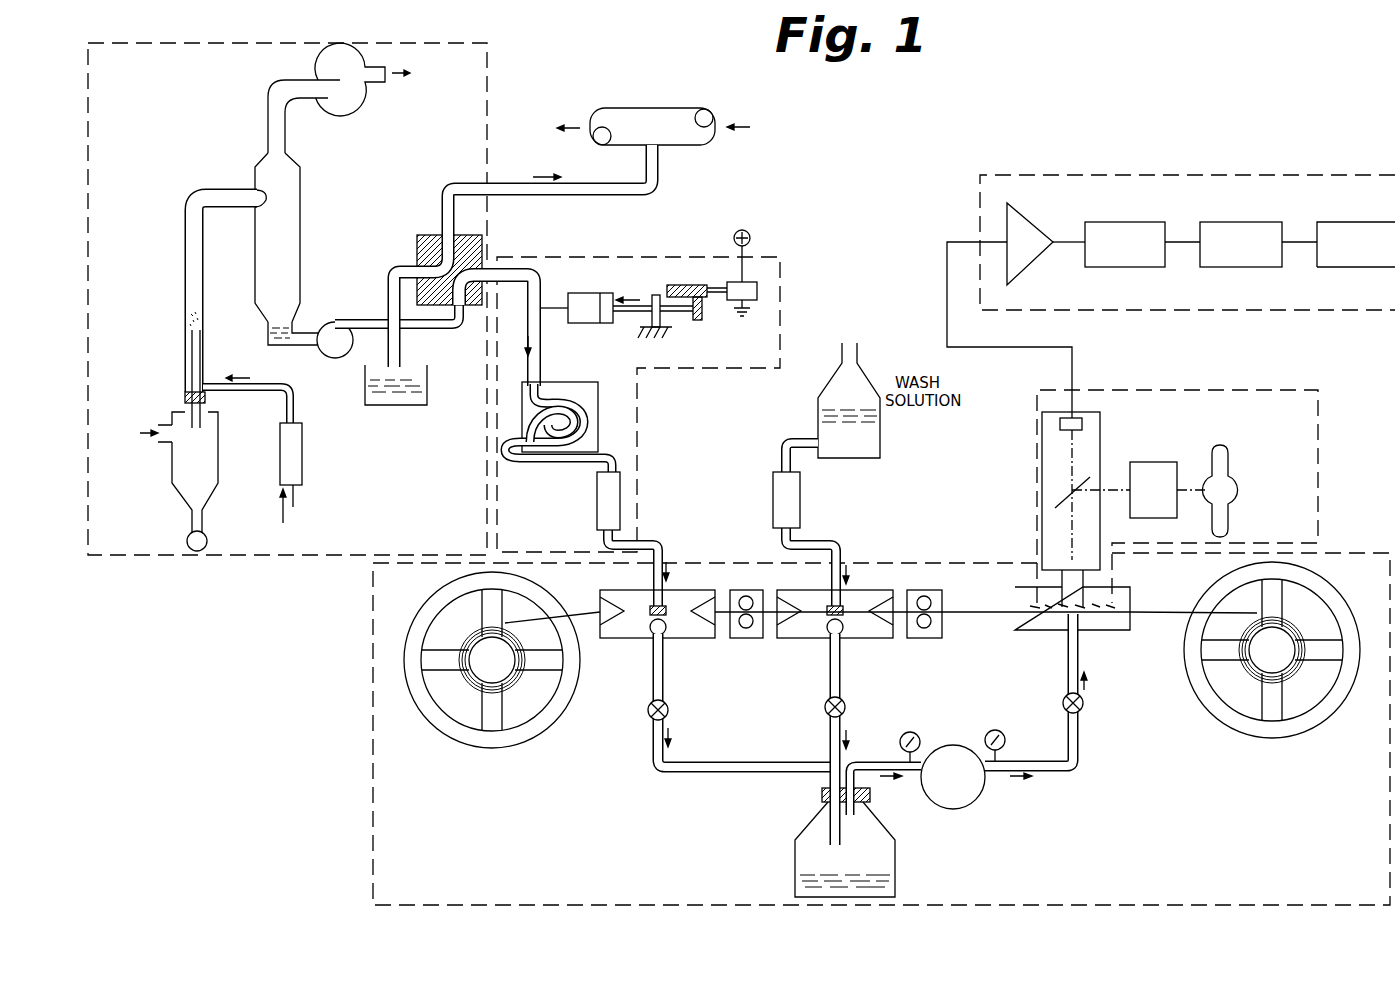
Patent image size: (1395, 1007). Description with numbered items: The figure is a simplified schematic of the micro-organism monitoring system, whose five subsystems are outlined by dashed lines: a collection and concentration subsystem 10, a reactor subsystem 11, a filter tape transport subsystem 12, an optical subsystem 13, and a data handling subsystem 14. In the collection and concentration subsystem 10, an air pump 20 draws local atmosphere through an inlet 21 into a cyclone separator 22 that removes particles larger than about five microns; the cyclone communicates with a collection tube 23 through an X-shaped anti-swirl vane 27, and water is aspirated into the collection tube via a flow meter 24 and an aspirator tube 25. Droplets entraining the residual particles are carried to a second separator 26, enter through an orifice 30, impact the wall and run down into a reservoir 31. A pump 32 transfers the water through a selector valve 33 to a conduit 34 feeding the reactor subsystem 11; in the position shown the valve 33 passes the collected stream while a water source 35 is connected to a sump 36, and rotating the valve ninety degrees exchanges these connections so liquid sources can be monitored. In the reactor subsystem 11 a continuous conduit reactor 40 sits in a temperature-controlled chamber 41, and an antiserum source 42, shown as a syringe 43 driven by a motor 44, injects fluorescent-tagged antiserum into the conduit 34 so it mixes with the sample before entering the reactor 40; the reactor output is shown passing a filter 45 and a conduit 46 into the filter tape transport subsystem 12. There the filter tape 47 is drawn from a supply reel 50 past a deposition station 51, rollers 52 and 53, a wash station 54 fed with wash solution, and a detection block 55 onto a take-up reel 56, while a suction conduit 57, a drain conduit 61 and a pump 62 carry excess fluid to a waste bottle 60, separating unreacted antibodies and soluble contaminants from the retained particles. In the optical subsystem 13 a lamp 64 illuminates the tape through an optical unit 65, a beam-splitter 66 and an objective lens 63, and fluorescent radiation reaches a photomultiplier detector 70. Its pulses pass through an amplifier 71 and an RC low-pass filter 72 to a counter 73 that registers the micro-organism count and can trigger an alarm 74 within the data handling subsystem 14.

The collection and concentration subsystem 10 is at (487, 45).
The reactor subsystem 11 is at (780, 337).
The filter tape transport subsystem 12 is at (1340, 553).
The optical subsystem 13 is at (1175, 390).
The data handling subsystem 14 is at (978, 210).
The air pump 20 is at (337, 117).
The inlet 21 is at (168, 425).
The cyclone separator 22 is at (218, 477).
The collection tube 23 is at (183, 240).
The flow meter 24 is at (302, 446).
The aspirator tube 25 is at (190, 350).
The second separator 26 is at (300, 190).
The X-shaped anti-swirl vane 27 is at (205, 397).
The orifice 30 is at (267, 188).
The reservoir 31 is at (268, 333).
The pump 32 is at (318, 333).
The selector valve 33 is at (417, 252).
The conduit 34 is at (490, 262).
The water source 35 is at (647, 108).
The sump 36 is at (415, 407).
The continuous conduit reactor 40 is at (584, 402).
The temperature-controlled chamber 41 is at (564, 382).
The antiserum source 42 is at (661, 304).
The syringe 43 is at (568, 293).
The motor 44 is at (757, 290).
The filter 45 is at (597, 500).
The conduit 46 is at (662, 543).
The filter tape 47 is at (590, 612).
The supply reel 50 is at (430, 735).
The sample valve 51 is at (672, 638).
The roller 52 is at (752, 630).
The roller 53 is at (930, 630).
The wash valve 54 is at (850, 638).
The detection block 55 is at (1050, 632).
The take-up reel 56 is at (1218, 728).
The suction conduit 57 is at (1080, 745).
The waste bottle 60 is at (895, 850).
The drain conduit 61 is at (662, 675).
The vacuum pump 62 is at (975, 800).
The objective lens 63 is at (1060, 605).
The lamp 64 is at (1230, 512).
The optical unit 65 is at (1140, 462).
The beam-splitter 66 is at (1068, 490).
The detector 70 is at (1082, 425).
The amplifier 71 is at (1025, 275).
The RC low-pass filter 72 is at (1115, 267).
The counter 73 is at (1225, 267).
The alarm 74 is at (1330, 267).